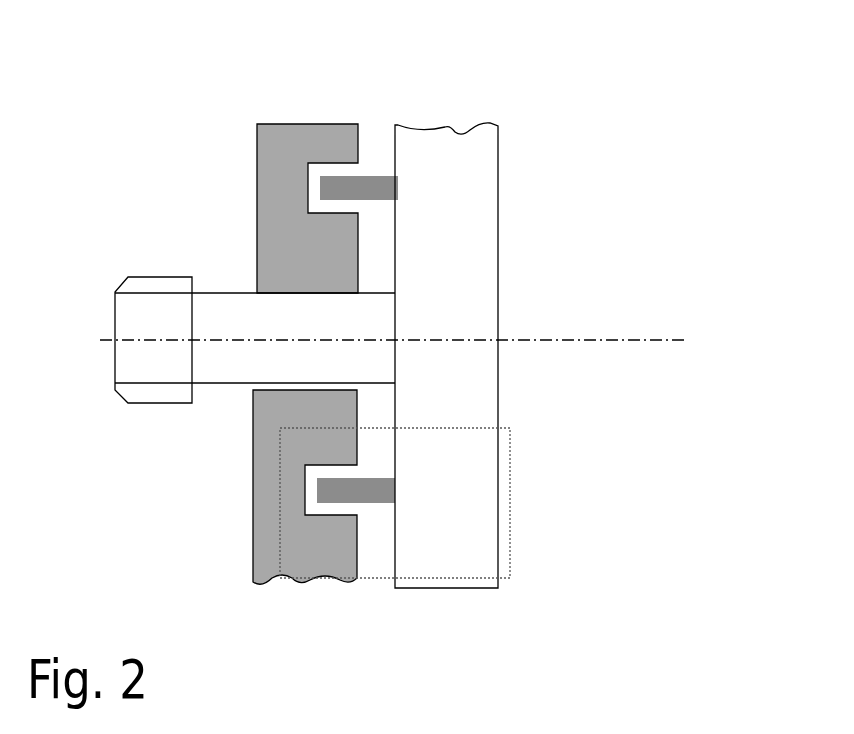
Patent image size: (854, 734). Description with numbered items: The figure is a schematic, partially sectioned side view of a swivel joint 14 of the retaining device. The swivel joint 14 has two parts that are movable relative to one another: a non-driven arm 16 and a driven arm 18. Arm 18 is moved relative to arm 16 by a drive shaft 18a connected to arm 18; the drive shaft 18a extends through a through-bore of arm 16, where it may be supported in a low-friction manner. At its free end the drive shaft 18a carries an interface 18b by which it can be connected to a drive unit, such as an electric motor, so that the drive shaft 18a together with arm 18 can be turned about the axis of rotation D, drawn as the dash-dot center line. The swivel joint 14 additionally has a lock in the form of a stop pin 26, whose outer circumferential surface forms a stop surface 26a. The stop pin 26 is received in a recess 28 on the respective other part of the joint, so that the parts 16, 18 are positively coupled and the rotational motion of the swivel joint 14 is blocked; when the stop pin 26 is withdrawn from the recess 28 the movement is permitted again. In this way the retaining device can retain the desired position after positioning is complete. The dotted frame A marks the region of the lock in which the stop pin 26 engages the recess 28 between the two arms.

The swivel joint 14 is at (579, 122).
The arm 16 is at (268, 503).
The arm 18 is at (475, 195).
The drive shaft 18a is at (225, 365).
The interface 18b is at (147, 285).
The stop pin 26 is at (367, 505).
The stop surface 26a is at (372, 214).
The recess 28 is at (330, 167).
The detail region A is at (510, 518).
The axis of rotation D is at (630, 340).